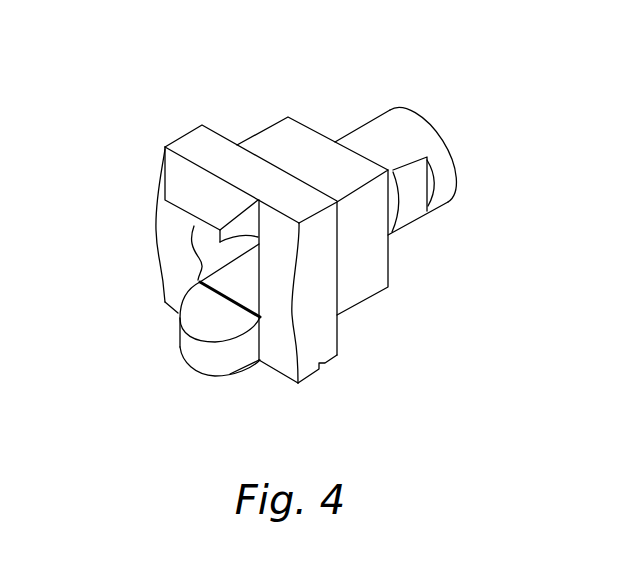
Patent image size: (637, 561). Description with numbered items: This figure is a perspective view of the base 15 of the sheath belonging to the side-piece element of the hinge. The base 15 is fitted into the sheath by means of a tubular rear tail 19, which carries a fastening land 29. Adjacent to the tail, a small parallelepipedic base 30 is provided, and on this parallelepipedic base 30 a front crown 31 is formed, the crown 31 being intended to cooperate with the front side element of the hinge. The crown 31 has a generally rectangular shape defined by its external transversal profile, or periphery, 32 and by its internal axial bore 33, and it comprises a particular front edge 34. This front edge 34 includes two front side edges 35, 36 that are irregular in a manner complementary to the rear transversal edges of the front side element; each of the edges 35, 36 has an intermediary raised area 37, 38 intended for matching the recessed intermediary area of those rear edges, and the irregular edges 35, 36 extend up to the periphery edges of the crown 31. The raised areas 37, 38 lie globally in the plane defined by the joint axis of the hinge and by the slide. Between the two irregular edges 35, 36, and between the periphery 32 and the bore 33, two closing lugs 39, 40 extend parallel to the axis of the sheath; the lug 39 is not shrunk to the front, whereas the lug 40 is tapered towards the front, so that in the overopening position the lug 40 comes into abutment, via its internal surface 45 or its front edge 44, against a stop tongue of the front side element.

The base 15 is at (253, 100).
The tubular rear tail 19 is at (378, 147).
The fastening land 29 is at (413, 198).
The parallelepipedic base 30 is at (363, 272).
The front crown 31 is at (333, 351).
The external transversal profile 32 is at (318, 325).
The internal axial bore 33 is at (204, 247).
The front edge 34 is at (278, 358).
The front side edge 35 is at (178, 313).
The front side edge 36 is at (282, 320).
The intermediary raised area 37 is at (178, 237).
The intermediary raised area 38 is at (272, 287).
The closing lug 39 is at (198, 198).
The closing lug 40 is at (177, 325).
The front edge 44 is at (237, 350).
The internal surface 45 is at (180, 342).